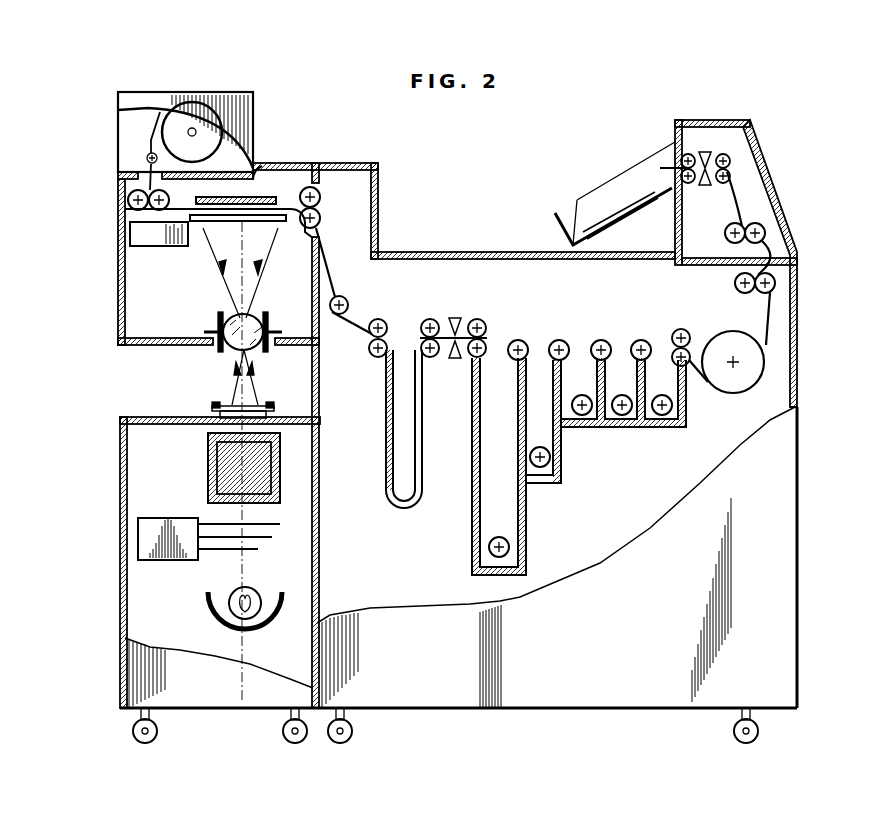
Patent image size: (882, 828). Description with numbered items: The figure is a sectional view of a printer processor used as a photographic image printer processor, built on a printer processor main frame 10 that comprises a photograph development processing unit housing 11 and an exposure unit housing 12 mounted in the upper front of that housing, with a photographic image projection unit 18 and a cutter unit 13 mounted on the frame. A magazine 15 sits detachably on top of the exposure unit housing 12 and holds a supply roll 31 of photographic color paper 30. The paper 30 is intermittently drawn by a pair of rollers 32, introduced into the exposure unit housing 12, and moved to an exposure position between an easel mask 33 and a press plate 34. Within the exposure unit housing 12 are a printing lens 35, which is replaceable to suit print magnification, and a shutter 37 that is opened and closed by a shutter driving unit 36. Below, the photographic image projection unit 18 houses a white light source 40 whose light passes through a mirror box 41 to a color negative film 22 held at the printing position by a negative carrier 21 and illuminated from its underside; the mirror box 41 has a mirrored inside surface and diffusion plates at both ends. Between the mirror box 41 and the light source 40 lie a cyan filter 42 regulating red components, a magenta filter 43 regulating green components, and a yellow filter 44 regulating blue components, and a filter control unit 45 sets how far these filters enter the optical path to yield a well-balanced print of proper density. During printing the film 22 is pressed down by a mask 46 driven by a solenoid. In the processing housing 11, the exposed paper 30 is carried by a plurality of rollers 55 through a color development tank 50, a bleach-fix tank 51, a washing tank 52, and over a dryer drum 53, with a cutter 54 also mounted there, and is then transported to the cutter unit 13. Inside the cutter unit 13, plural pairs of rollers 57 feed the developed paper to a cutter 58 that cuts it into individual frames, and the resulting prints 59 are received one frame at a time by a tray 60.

The printer processor main frame 10 is at (810, 548).
The photograph development processing unit housing 11 is at (788, 467).
The exposure unit housing 12 is at (118, 280).
The cutter unit 13 is at (775, 188).
The magazine 15 is at (200, 98).
The photographic image projection unit 18 is at (120, 458).
The negative carrier 21 is at (212, 416).
The color negative film 22 is at (270, 404).
The photographic color paper 30 is at (150, 156).
The supply roll 31 is at (216, 140).
The pair of rollers 32 is at (128, 201).
The easel mask 33 is at (285, 222).
The press plate 34 is at (262, 196).
The printing lens 35 is at (228, 330).
The shutter driving unit 36 is at (130, 233).
The shutter 37 is at (207, 240).
The white light source 40 is at (230, 620).
The mirror box 41 is at (208, 466).
The cyan filter 42 is at (208, 553).
The magenta filter 43 is at (266, 540).
The yellow filter 44 is at (275, 522).
The filter control unit 45 is at (138, 536).
The mask 46 is at (222, 405).
The color development tank 50 is at (527, 533).
The bleach-fix tank 51 is at (556, 470).
The washing tank 52 is at (683, 432).
The dryer drum 53 is at (735, 394).
The cutter 54 is at (456, 318).
The rollers 55 is at (378, 319).
The pairs of rollers 57 is at (733, 162).
The cutter 58 is at (706, 152).
The prints 59 is at (608, 218).
The tray 60 is at (648, 168).